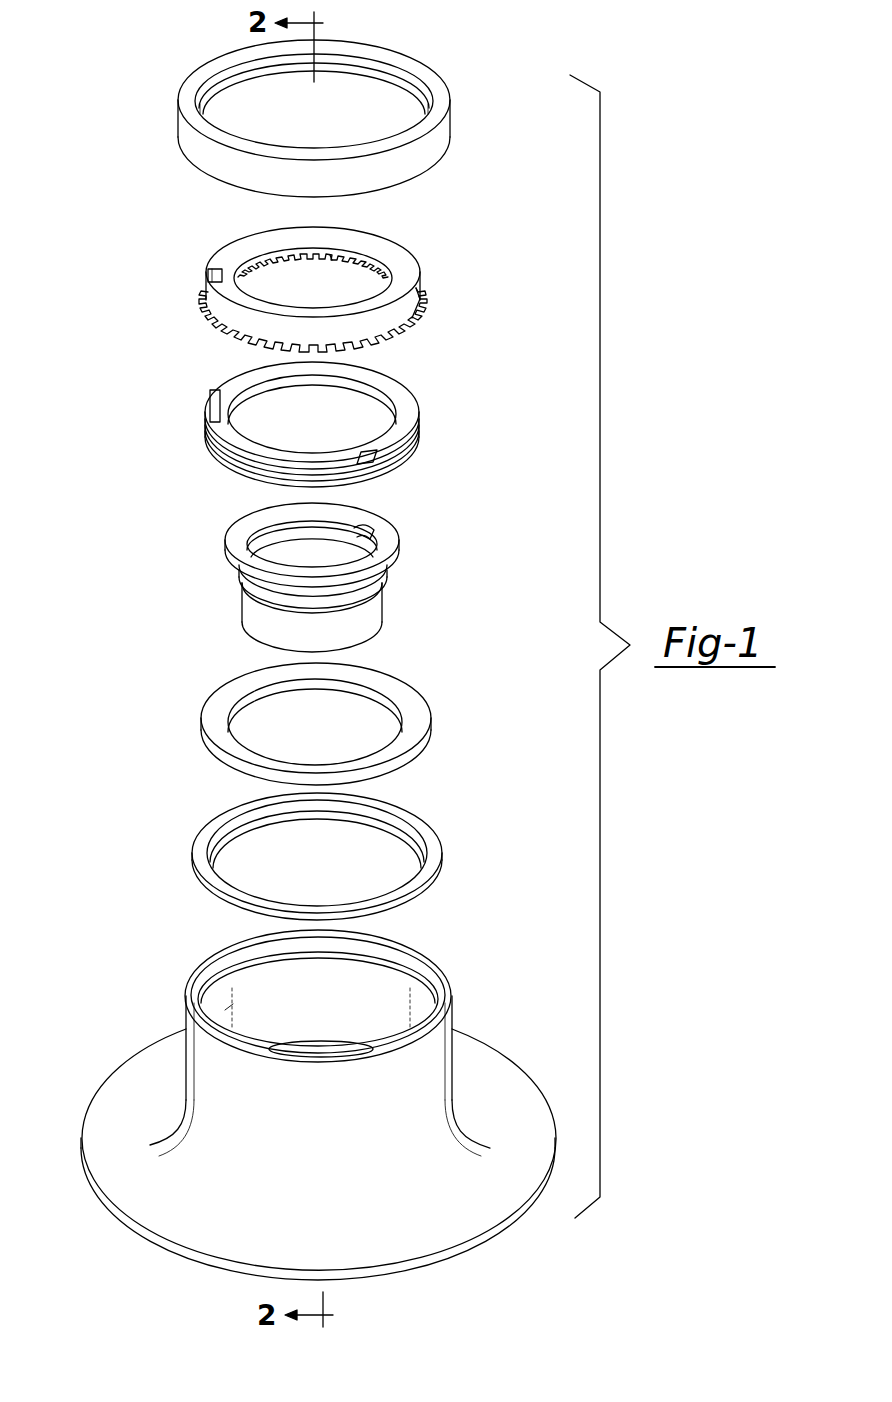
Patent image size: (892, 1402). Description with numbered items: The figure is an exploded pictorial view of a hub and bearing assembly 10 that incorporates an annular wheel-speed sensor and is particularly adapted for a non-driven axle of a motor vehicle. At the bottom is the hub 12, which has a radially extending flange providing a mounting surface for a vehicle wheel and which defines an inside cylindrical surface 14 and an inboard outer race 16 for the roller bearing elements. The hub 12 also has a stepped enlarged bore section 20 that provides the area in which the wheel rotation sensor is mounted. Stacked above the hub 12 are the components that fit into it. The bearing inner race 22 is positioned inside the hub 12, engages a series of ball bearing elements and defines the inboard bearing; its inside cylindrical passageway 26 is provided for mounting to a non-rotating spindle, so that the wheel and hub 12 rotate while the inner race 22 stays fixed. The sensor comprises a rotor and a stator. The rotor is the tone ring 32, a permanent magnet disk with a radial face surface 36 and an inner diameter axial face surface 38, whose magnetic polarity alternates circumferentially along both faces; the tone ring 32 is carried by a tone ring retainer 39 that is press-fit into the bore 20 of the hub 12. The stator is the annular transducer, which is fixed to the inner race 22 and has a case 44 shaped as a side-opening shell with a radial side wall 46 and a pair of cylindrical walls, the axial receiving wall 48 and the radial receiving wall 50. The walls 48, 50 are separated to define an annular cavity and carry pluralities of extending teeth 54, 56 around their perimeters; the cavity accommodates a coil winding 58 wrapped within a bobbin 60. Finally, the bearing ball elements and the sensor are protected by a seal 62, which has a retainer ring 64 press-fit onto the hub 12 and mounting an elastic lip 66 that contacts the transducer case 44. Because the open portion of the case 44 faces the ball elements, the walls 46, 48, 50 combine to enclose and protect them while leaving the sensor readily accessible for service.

The hub and bearing assembly 10 is at (132, 314).
The hub 12 is at (326, 1094).
The inside cylindrical surface 14 is at (375, 1026).
The inboard outer race 16 is at (224, 1010).
The stepped enlarged bore section 20 is at (427, 979).
The bearing inner race 22 is at (309, 577).
The inside cylindrical passageway 26 is at (367, 528).
The tone ring 32 is at (300, 729).
The radial face surface 36 is at (398, 692).
The inner diameter axial face surface 38 is at (385, 748).
The tone ring retainer 39 is at (435, 852).
The case 44 is at (317, 282).
The radial side wall 46 is at (229, 262).
The axial receiving wall 48 is at (323, 250).
The radial receiving wall 50 is at (402, 325).
The teeth 54 is at (333, 258).
The teeth 56 is at (398, 330).
The coil winding 58 is at (372, 462).
The bobbin 60 is at (348, 430).
The seal 62 is at (349, 102).
The retainer ring 64 is at (446, 140).
The elastic lip 66 is at (224, 88).